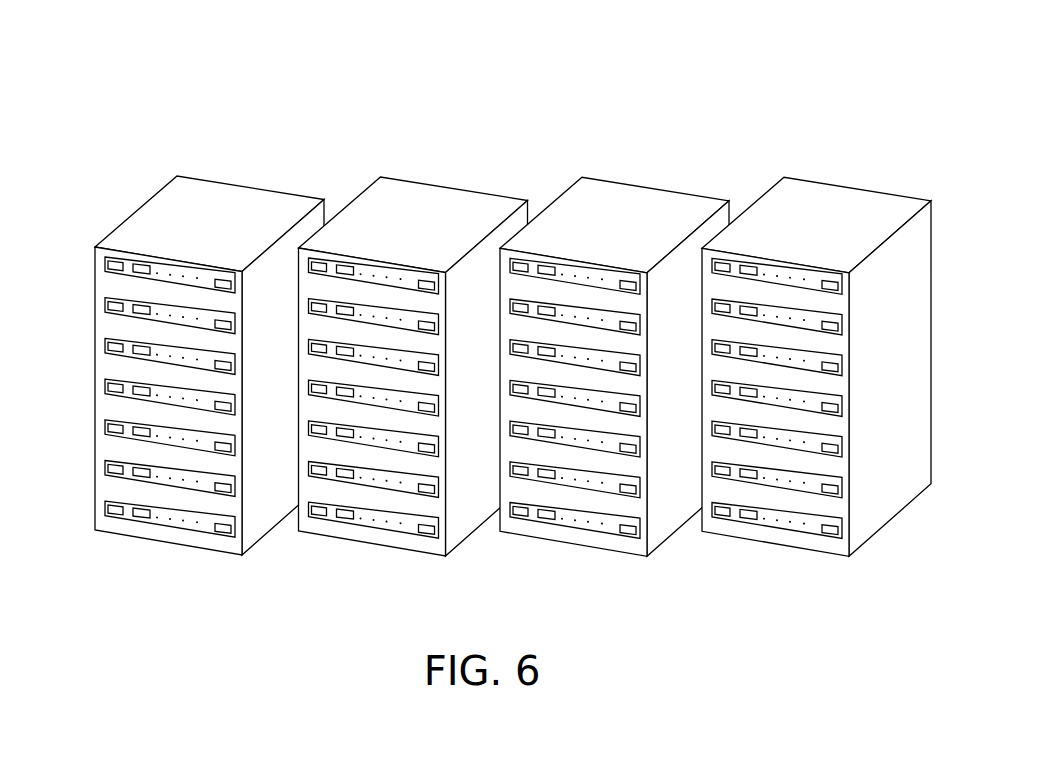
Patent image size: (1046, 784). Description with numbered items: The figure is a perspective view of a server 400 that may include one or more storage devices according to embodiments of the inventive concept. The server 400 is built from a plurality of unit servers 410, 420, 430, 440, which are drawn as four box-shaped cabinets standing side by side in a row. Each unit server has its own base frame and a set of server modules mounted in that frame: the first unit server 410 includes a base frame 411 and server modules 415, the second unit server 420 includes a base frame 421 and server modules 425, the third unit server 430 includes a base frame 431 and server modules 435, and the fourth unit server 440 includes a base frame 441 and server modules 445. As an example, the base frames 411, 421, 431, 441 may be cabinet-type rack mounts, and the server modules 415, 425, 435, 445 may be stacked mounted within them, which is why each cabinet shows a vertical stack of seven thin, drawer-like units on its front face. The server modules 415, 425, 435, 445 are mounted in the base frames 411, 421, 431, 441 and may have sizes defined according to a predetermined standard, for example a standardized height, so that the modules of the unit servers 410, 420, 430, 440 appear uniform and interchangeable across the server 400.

The server 400 is at (497, 303).
The unit server 410 is at (194, 332).
The base frame 411 is at (135, 210).
The server modules 415 is at (105, 263).
The unit server 420 is at (413, 354).
The base frame 421 is at (474, 532).
The server modules 425 is at (365, 528).
The unit server 430 is at (614, 356).
The base frame 431 is at (677, 530).
The server modules 435 is at (569, 528).
The unit server 440 is at (816, 355).
The base frame 441 is at (881, 533).
The server modules 445 is at (771, 527).